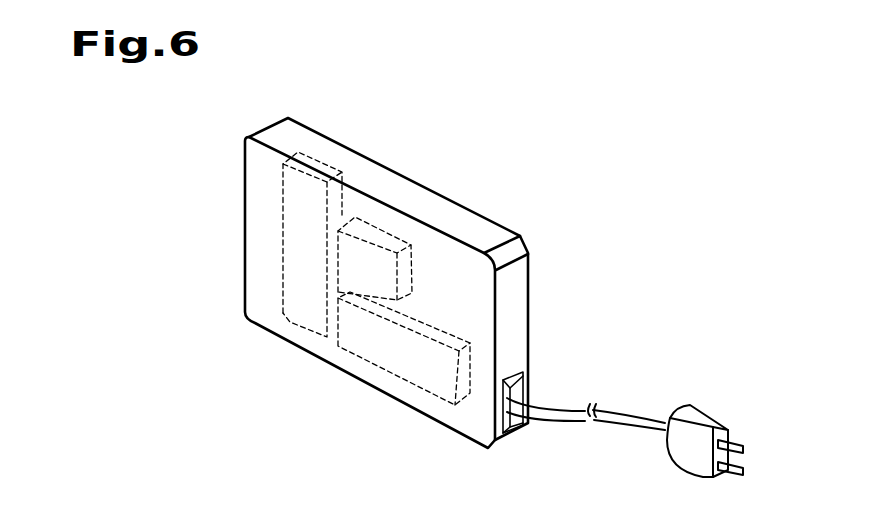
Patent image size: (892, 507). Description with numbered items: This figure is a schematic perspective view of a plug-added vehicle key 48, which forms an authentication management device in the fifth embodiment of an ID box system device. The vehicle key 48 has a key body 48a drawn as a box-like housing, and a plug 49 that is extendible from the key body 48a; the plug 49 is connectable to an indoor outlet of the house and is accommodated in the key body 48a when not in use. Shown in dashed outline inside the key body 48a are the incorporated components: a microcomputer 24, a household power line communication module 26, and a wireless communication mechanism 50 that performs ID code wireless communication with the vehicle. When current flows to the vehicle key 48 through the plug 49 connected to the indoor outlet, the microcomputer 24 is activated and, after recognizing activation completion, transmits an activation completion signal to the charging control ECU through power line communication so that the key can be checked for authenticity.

The plug-added vehicle key 48 is at (272, 123).
The key body 48a is at (435, 203).
The wireless communication mechanism 50 is at (282, 222).
The microcomputer 24 is at (415, 277).
The household power line communication module 26 is at (385, 368).
The plug 49 is at (636, 410).